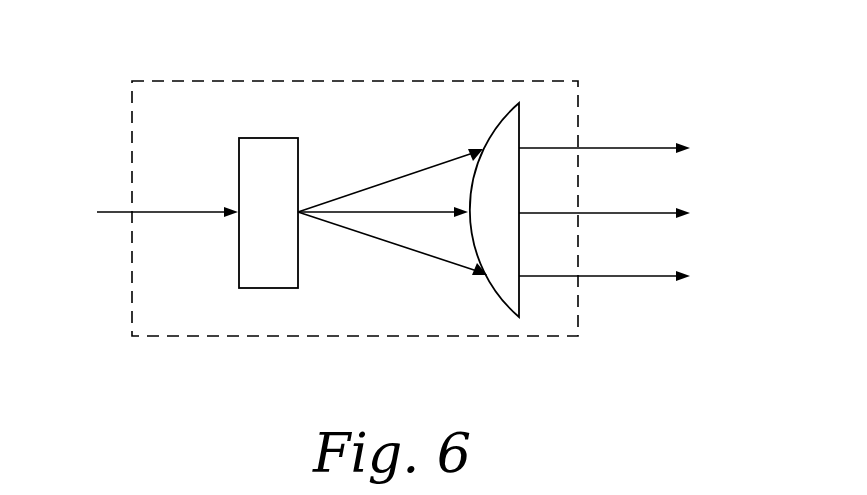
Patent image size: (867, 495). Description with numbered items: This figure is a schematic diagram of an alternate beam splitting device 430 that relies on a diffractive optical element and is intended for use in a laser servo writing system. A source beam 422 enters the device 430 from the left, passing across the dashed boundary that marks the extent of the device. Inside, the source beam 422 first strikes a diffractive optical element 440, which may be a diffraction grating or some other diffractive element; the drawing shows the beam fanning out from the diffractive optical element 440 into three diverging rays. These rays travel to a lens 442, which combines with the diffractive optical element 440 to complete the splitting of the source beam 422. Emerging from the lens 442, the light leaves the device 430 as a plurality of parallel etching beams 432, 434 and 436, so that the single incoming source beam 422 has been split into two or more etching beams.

The source beam 422 is at (121, 210).
The beam splitting device 430 is at (484, 80).
The etching beam 432 is at (644, 147).
The etching beam 434 is at (644, 212).
The etching beam 436 is at (634, 278).
The diffractive optical element 440 is at (276, 137).
The lens 442 is at (521, 307).